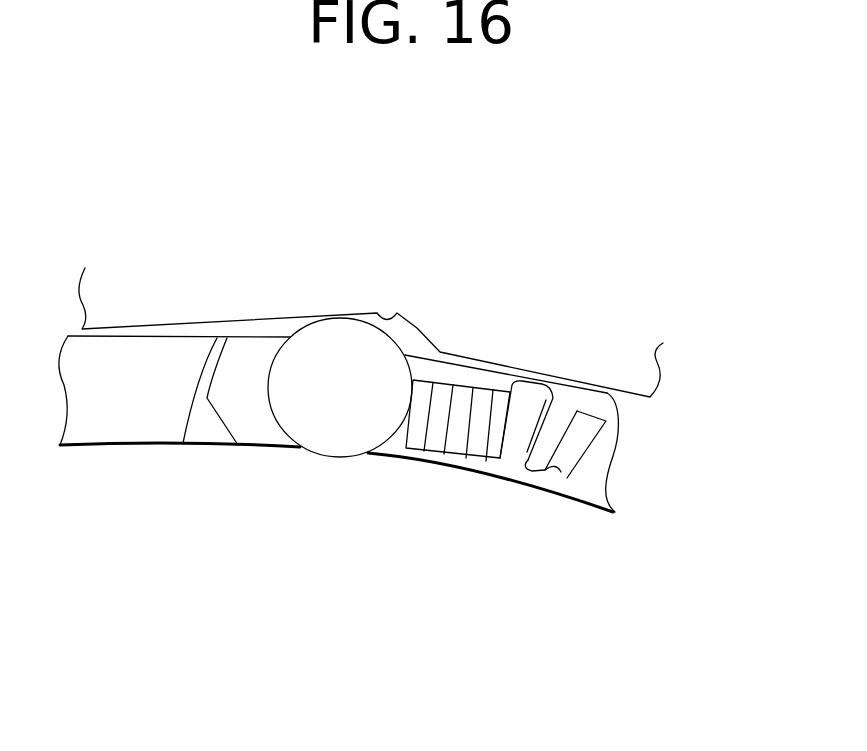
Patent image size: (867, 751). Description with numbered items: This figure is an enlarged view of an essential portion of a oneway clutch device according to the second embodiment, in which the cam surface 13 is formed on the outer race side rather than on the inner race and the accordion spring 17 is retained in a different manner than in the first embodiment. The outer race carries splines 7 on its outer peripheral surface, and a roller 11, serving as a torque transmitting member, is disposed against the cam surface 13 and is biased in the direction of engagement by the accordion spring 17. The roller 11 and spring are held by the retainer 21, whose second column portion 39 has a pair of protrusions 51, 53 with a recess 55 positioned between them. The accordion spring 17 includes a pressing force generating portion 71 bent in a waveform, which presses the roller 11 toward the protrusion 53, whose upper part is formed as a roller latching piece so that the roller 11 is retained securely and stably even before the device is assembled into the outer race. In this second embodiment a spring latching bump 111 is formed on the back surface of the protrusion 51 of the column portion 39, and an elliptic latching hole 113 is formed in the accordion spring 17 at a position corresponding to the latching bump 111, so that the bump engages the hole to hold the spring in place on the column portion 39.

The splines 7 is at (455, 286).
The cam surface 13 is at (378, 315).
The second column portion 39 is at (627, 415).
The retainer 21 is at (133, 448).
The roller 11 is at (328, 433).
The accordion spring 17 is at (446, 469).
The pressing force generating portion 71 is at (478, 448).
The protrusion 51 is at (540, 407).
The elliptic latching hole 113 is at (550, 413).
The spring latching bump 111 is at (540, 433).
The recess 55 is at (552, 463).
The protrusion 53 is at (580, 439).